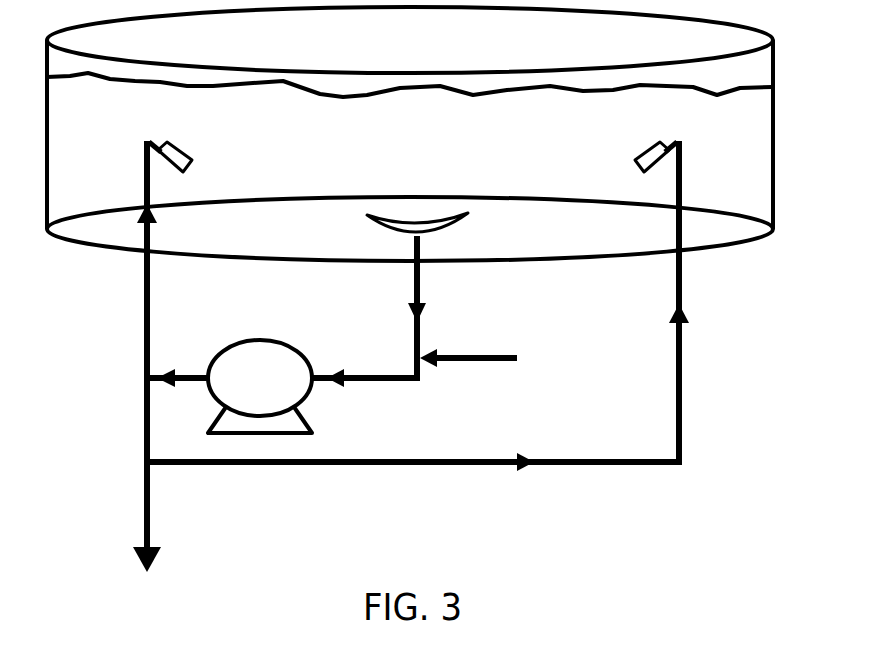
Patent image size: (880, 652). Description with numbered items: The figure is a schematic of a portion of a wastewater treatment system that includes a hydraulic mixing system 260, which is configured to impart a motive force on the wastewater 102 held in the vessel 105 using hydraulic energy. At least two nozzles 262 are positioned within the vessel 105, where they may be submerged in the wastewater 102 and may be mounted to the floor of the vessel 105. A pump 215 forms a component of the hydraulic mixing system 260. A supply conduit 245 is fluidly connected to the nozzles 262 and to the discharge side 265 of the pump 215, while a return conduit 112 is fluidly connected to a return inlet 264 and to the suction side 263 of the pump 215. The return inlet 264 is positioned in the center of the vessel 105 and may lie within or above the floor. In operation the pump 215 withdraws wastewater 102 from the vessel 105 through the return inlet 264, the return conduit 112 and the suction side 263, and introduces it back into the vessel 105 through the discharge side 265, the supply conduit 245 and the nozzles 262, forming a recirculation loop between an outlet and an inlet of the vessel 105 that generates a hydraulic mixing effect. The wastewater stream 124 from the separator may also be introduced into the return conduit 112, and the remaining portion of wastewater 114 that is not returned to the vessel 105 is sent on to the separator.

The wastewater 102 is at (725, 90).
The vessel 105 is at (776, 107).
The return conduit 112 is at (427, 283).
The remaining portion of wastewater introduced to the separator 114 is at (124, 517).
The wastewater stream from the separator 124 is at (497, 359).
The pump 215 is at (253, 357).
The supply conduit 245 is at (144, 304).
The hydraulic mixing system 260 is at (108, 383).
The nozzles 262 is at (178, 148).
The suction side of pump 263 is at (318, 368).
The return inlet 264 is at (418, 220).
The discharge side of pump 265 is at (207, 370).